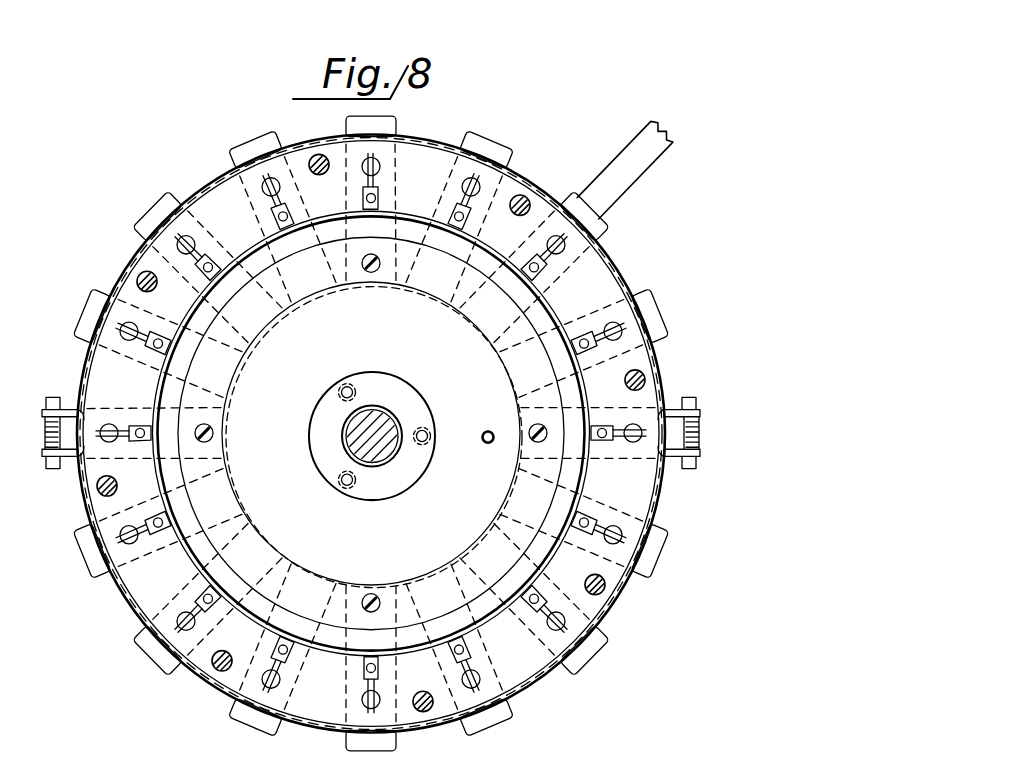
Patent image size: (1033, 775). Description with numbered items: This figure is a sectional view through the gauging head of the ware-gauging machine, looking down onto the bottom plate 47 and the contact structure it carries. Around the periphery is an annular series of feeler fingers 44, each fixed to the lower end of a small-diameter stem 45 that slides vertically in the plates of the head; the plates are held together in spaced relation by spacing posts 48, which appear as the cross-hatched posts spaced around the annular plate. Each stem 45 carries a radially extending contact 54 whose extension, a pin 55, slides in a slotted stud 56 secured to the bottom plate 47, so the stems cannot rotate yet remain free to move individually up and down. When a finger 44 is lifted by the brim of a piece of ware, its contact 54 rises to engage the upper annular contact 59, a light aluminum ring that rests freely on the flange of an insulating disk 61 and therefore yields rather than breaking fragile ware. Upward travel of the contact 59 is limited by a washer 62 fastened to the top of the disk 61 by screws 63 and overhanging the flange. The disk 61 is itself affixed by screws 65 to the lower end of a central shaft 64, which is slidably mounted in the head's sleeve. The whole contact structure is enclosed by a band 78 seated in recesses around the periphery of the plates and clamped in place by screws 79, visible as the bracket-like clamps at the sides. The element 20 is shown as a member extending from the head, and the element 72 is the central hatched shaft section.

The arm 20 is at (628, 175).
The feeler finger 44 is at (82, 559).
The stem 45 is at (371, 432).
The bottom plate 47 is at (371, 433).
The spacing post 48 is at (520, 220).
The contact 54 is at (380, 201).
The pin 55 is at (380, 171).
The slotted stud 56 is at (562, 253).
The upper annular contact 59 is at (584, 468).
The disk 61 is at (374, 437).
The washer 62 is at (226, 468).
The screws 63 is at (375, 595).
The shaft 64 is at (393, 416).
The screws 65 is at (341, 389).
The shaft 72 is at (344, 433).
The band 78 is at (89, 352).
The screws 79 is at (43, 434).